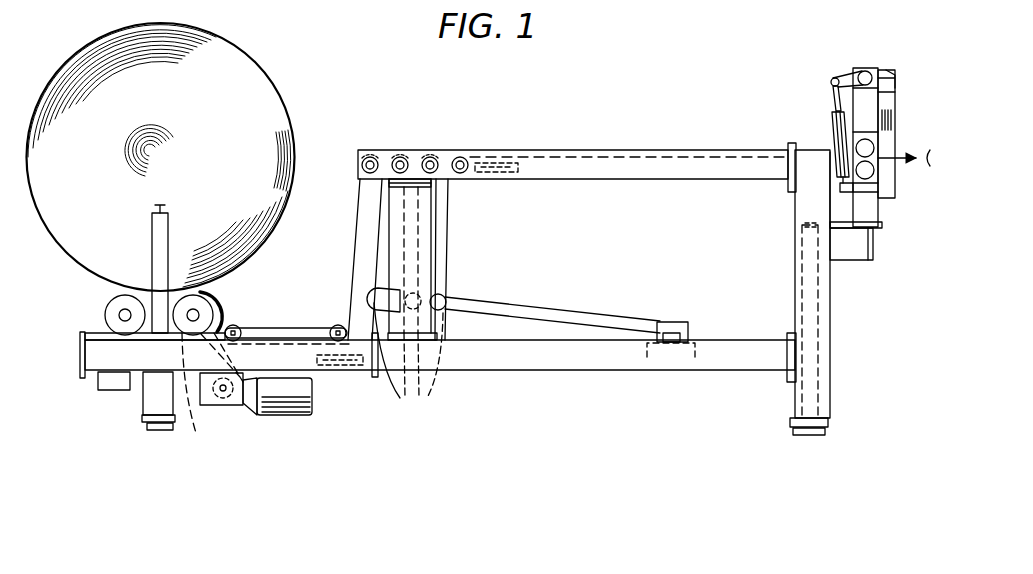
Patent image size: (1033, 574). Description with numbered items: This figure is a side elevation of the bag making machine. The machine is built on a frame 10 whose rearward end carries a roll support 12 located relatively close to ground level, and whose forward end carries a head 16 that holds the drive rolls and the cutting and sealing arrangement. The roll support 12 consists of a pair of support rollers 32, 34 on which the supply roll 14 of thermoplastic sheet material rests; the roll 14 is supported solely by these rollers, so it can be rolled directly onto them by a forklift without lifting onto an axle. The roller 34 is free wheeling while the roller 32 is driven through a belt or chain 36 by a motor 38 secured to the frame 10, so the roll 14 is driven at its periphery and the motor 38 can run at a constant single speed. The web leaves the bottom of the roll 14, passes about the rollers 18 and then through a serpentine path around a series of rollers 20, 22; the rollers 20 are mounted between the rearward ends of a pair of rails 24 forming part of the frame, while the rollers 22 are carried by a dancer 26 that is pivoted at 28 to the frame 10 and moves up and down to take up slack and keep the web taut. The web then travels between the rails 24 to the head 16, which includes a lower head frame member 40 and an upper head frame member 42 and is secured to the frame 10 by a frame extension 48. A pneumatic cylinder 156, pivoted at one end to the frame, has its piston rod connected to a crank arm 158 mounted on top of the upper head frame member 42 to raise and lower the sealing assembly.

The frame 10 is at (483, 378).
The roll support 12 is at (231, 307).
The supply roll 14 is at (258, 90).
The head 16 is at (814, 62).
The rollers 18 is at (340, 326).
The rollers 20 is at (455, 158).
The rollers 22 is at (408, 301).
The rails 24 is at (627, 170).
The dancer 26 is at (560, 312).
The pivot 28 is at (675, 328).
The support roller 32 is at (217, 298).
The support roller 34 is at (108, 297).
The belt or chain 36 is at (219, 413).
The motor 38 is at (288, 413).
The lower head frame member 40 is at (887, 224).
The upper head frame member 42 is at (861, 106).
The frame extension 48 is at (855, 250).
The pneumatic cylinder 156 is at (828, 118).
The crank arm 158 is at (847, 78).